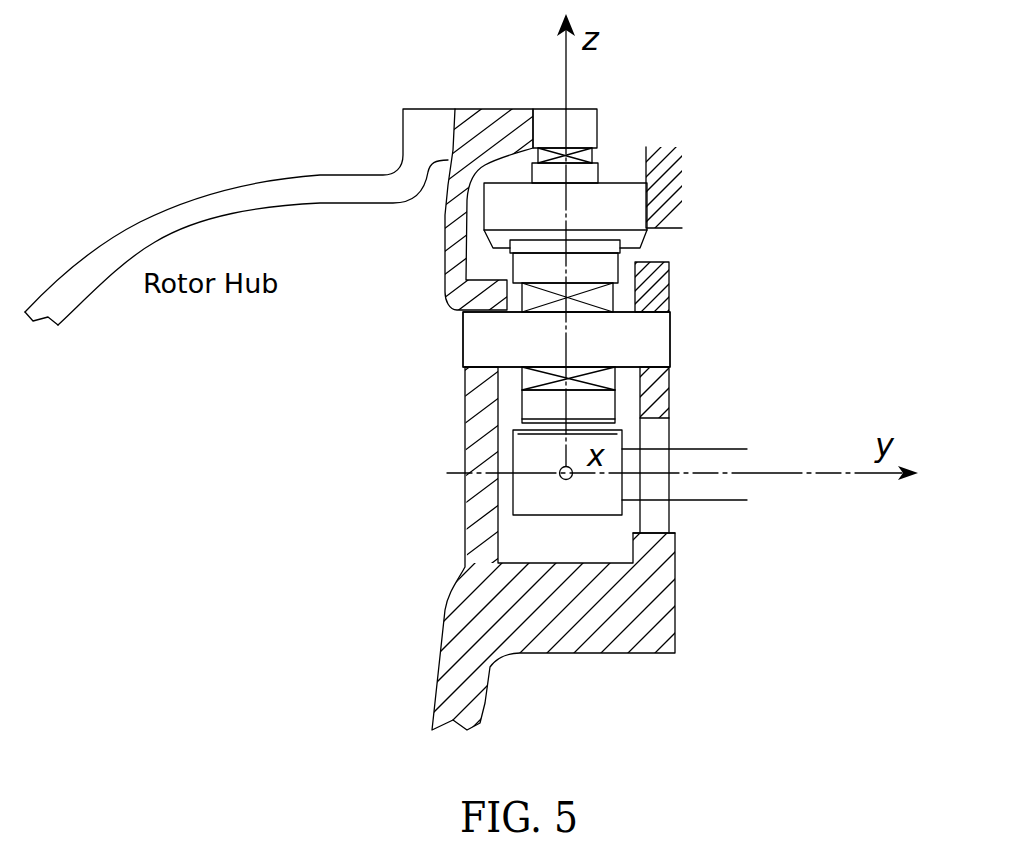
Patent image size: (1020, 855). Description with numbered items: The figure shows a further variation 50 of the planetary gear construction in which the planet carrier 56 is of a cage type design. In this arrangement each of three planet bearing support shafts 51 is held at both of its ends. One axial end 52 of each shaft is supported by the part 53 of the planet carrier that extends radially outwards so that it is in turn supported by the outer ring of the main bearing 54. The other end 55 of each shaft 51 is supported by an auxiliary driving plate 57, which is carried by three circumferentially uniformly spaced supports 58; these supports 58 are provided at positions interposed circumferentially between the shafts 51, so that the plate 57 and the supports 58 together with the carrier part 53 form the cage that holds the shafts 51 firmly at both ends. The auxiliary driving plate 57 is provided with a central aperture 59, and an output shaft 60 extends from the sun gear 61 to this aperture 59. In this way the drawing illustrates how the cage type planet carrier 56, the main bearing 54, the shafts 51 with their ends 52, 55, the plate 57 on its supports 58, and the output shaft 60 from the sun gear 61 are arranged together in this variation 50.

The further variation 50 is at (733, 180).
The planet bearing support shaft 51 is at (631, 349).
The axial end 52 is at (463, 341).
The part of the planet carrier 53 is at (445, 263).
The main bearing 54 is at (595, 159).
The other end 55 is at (670, 340).
The planet carrier 56 is at (442, 638).
The auxiliary driving plate 57 is at (669, 391).
The supports 58 is at (666, 590).
The central aperture 59 is at (650, 418).
The output shaft 60 is at (697, 487).
The sun gear 61 is at (559, 511).